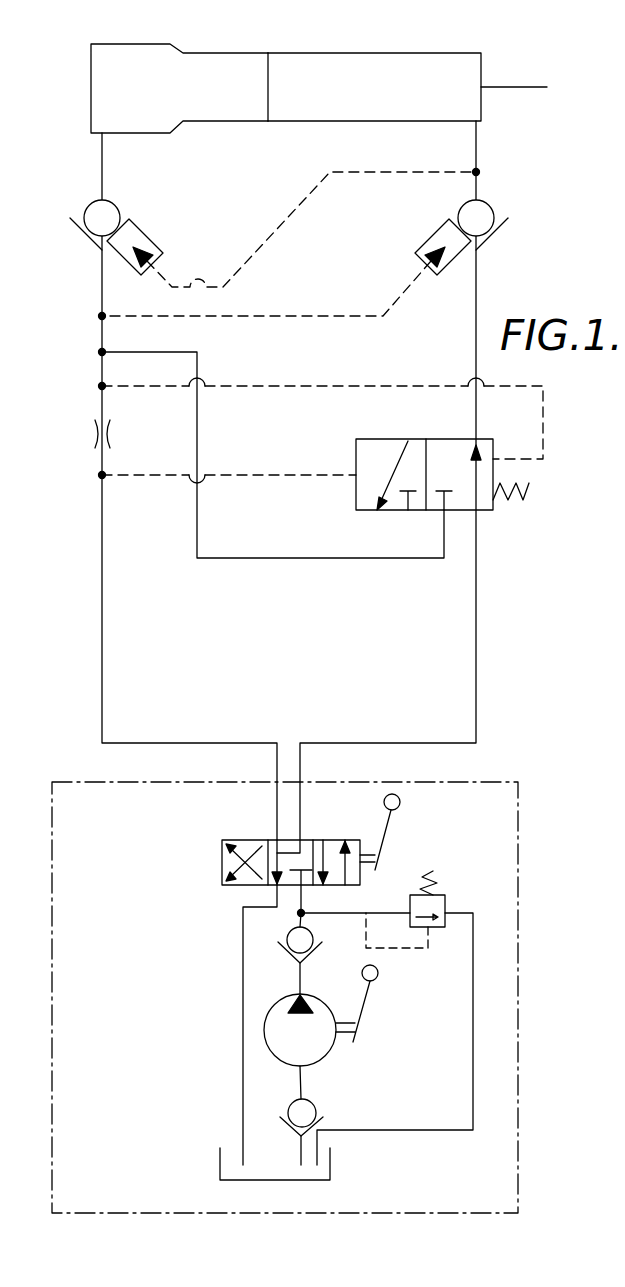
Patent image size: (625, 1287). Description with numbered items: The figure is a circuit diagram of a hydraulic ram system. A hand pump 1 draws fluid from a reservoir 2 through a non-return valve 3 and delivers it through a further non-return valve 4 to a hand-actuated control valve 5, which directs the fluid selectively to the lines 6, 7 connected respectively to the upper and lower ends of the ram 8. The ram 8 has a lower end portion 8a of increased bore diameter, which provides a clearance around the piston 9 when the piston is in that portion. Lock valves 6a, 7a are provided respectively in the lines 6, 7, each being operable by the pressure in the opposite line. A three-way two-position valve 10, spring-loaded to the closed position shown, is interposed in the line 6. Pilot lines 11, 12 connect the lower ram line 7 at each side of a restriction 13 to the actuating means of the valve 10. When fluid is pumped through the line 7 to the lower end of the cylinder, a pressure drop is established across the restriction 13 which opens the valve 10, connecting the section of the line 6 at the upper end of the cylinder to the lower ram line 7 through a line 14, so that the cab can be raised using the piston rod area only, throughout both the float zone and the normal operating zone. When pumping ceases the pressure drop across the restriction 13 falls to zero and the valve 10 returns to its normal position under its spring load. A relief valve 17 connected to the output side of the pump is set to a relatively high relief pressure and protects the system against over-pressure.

The hand pump 1 is at (318, 1042).
The reservoir 2 is at (257, 1173).
The non-return valve 3 is at (307, 1112).
The further non-return valve 4 is at (312, 935).
The hand-actuated control valve 5 is at (355, 877).
The line 6 is at (476, 608).
The lock valve 6a is at (480, 213).
The line 7 is at (102, 608).
The lock valve 7a is at (96, 212).
The ram 8 is at (365, 56).
The lower end portion 8a is at (137, 52).
The piston 9 is at (268, 63).
The three-way two-position valve 10 is at (485, 503).
The pilot line 11 is at (150, 475).
The pilot line 12 is at (132, 386).
The restriction 13 is at (93, 430).
The line 14 is at (318, 560).
The pressure relief valve 17 is at (433, 906).